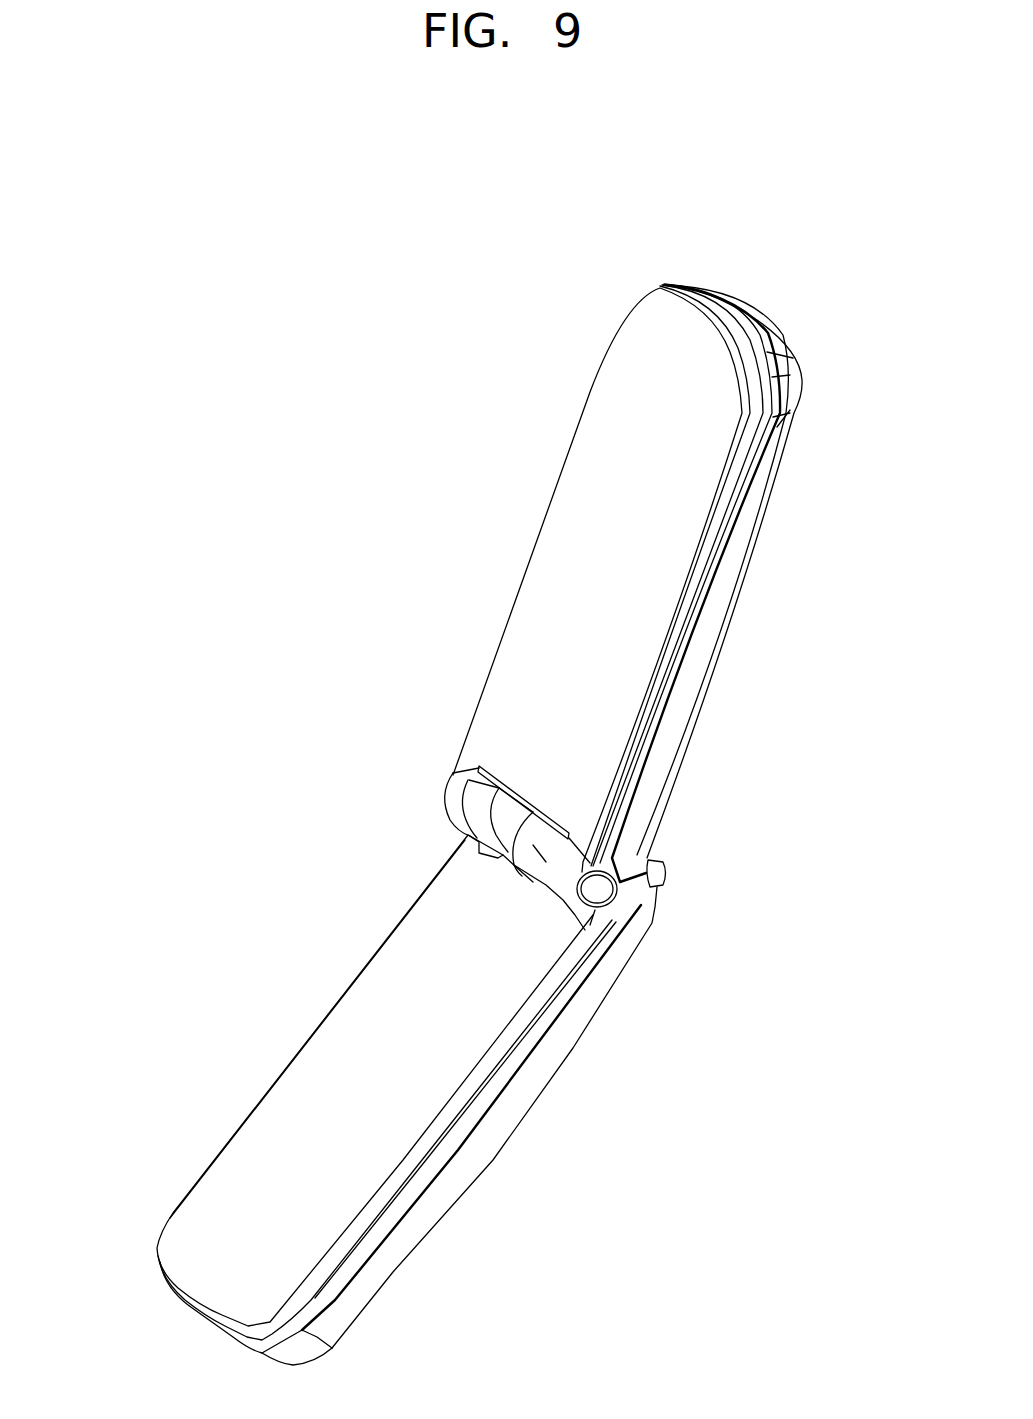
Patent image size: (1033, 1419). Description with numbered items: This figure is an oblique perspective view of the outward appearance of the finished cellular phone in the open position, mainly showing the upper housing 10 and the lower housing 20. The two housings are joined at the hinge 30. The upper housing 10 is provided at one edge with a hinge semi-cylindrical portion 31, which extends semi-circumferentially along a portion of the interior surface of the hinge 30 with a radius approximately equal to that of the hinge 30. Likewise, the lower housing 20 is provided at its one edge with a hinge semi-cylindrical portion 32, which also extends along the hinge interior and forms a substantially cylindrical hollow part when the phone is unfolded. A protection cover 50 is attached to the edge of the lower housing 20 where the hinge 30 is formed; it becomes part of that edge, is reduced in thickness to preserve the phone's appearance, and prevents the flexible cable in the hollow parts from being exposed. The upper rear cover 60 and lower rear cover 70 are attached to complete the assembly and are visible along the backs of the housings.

The upper housing 10 is at (660, 367).
The lower housing 20 is at (210, 1250).
The hinge 30 is at (598, 895).
The hinge semi-cylindrical portion 31 is at (498, 820).
The hinge semi-cylindrical portion 32 is at (588, 927).
The protection cover 50 is at (663, 865).
The upper rear cover 60 is at (777, 427).
The lower rear cover 70 is at (340, 1313).